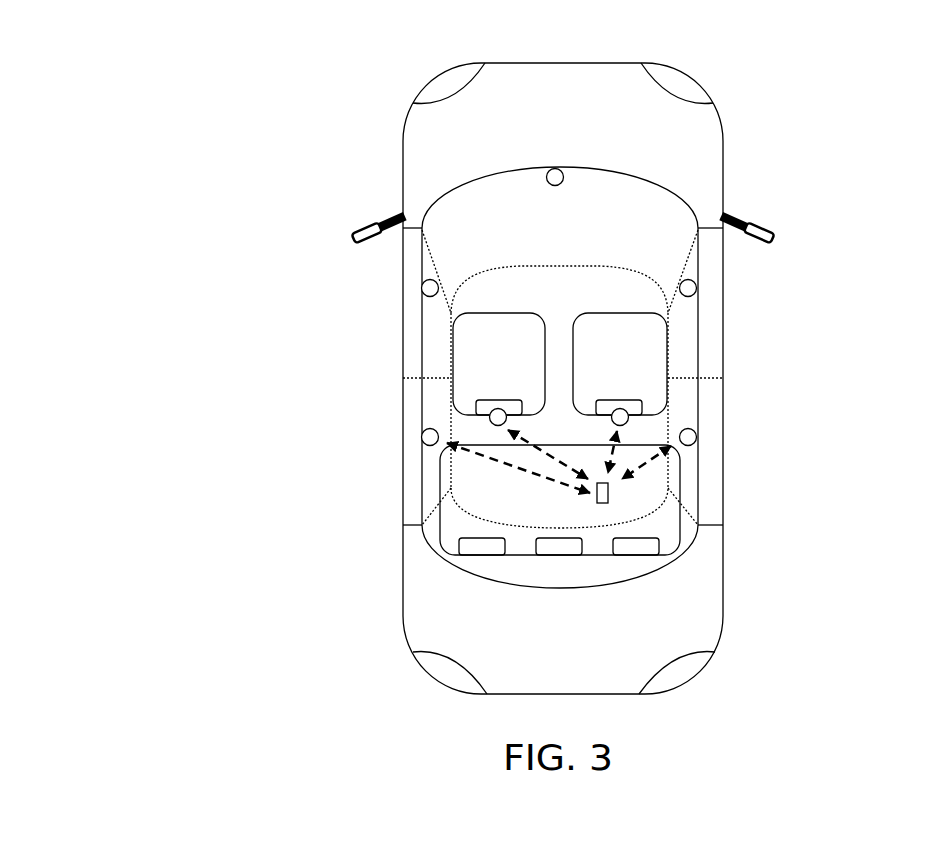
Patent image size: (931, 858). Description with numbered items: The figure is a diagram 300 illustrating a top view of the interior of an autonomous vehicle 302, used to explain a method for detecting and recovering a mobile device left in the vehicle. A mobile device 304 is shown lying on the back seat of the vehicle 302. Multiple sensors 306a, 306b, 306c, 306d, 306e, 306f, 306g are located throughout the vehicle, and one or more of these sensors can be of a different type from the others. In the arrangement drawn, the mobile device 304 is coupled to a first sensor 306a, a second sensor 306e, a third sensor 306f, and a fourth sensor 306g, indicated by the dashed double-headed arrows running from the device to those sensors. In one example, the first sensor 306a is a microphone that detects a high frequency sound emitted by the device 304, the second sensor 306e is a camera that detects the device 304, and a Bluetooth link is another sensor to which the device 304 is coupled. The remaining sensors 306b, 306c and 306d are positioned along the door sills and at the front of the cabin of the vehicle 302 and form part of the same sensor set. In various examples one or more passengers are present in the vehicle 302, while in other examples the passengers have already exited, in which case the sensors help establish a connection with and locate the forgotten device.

The diagram 300 is at (84, 52).
The autonomous vehicle 302 is at (724, 58).
The mobile device 304 is at (601, 509).
The first sensor 306a is at (415, 441).
The sensor 306b is at (413, 292).
The sensor 306c is at (557, 162).
The sensor 306d is at (704, 289).
The second sensor 306e is at (704, 438).
The third sensor 306f is at (499, 408).
The fourth sensor 306g is at (618, 408).